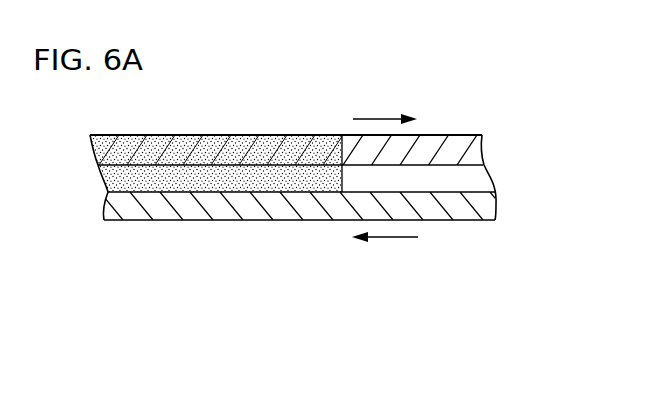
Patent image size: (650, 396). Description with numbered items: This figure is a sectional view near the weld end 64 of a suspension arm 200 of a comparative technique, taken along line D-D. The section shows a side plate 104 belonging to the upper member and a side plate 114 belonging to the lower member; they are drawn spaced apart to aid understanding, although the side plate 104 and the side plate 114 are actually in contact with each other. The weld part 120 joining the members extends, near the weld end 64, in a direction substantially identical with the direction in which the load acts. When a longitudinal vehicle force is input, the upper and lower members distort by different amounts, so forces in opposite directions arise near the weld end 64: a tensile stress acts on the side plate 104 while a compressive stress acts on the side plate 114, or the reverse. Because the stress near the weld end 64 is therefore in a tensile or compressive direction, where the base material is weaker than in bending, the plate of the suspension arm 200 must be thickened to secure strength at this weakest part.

The weld end 64 is at (340, 131).
The side plate 104 is at (457, 135).
The side plate 114 is at (463, 222).
The weld part 120 is at (172, 182).
The suspension arm 200 is at (338, 348).